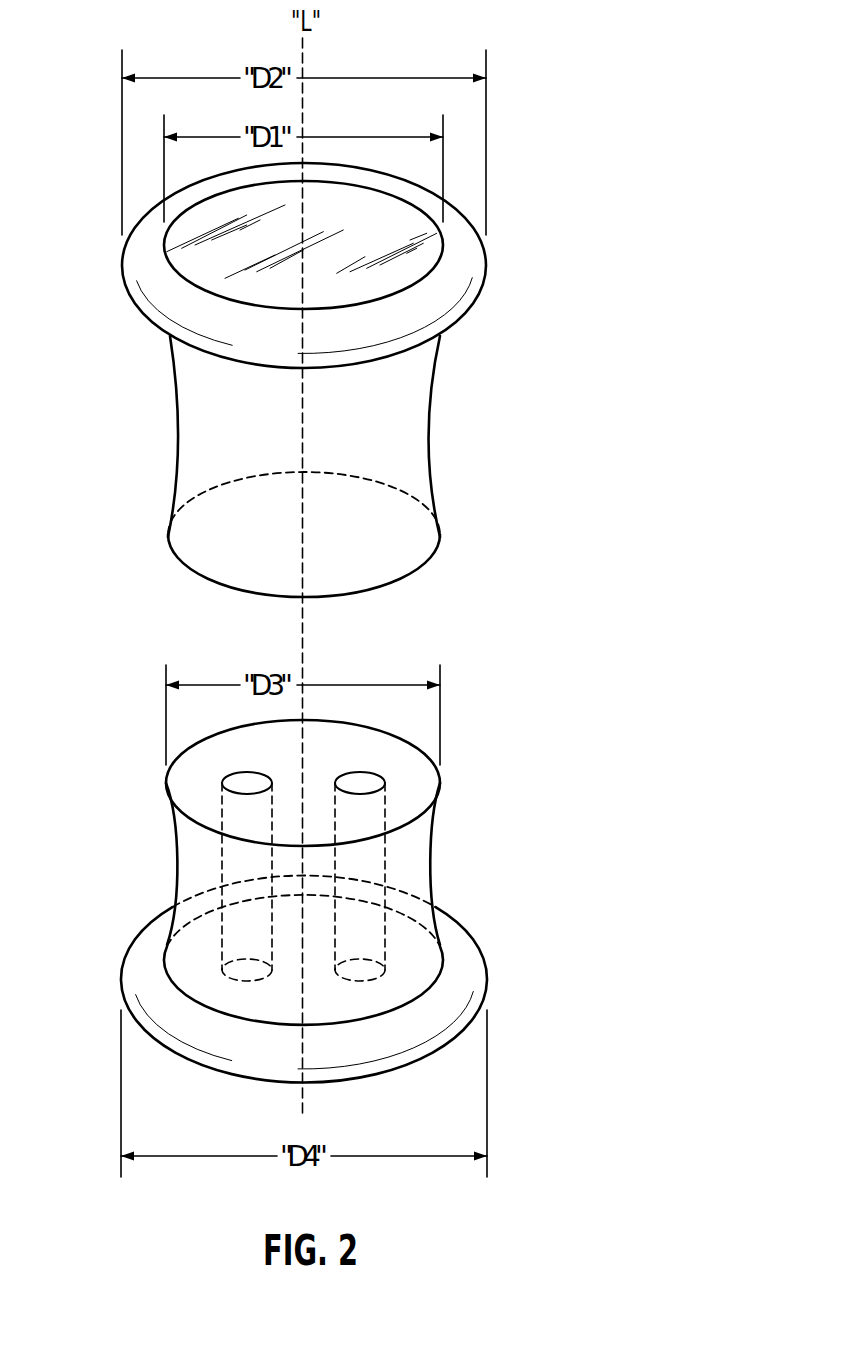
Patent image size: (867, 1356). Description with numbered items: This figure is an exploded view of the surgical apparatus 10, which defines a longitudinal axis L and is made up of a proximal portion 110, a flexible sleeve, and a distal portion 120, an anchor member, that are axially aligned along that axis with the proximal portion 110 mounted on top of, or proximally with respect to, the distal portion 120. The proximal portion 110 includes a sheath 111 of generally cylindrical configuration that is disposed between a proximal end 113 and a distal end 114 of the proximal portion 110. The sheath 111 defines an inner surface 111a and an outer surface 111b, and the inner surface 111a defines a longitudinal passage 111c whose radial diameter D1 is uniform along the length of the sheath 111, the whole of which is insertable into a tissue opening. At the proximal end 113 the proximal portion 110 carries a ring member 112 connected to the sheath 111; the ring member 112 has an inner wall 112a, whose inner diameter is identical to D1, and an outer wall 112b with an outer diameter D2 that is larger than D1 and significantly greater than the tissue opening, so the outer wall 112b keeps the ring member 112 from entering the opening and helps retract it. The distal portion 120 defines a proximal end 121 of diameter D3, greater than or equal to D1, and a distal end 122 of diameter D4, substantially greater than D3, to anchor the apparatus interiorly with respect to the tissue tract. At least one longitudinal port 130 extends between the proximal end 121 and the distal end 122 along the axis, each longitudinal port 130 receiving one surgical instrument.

The surgical apparatus 10 is at (630, 394).
The proximal portion 110 is at (311, 380).
The sheath 111 is at (302, 466).
The inner surface 111a is at (390, 283).
The outer surface 111b is at (428, 410).
The longitudinal passage 111c is at (218, 276).
The ring member 112 is at (140, 273).
The inner wall 112a is at (440, 247).
The outer wall 112b is at (478, 273).
The proximal end 113 is at (122, 260).
The distal end 114 is at (168, 550).
The distal portion 120 is at (313, 901).
The proximal end 121 is at (417, 797).
The distal end 122 is at (465, 953).
The longitudinal port 130 is at (232, 858).